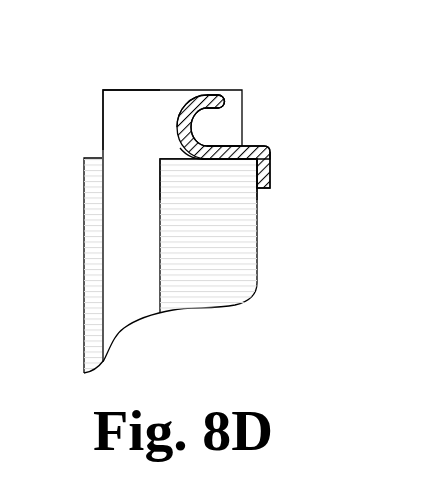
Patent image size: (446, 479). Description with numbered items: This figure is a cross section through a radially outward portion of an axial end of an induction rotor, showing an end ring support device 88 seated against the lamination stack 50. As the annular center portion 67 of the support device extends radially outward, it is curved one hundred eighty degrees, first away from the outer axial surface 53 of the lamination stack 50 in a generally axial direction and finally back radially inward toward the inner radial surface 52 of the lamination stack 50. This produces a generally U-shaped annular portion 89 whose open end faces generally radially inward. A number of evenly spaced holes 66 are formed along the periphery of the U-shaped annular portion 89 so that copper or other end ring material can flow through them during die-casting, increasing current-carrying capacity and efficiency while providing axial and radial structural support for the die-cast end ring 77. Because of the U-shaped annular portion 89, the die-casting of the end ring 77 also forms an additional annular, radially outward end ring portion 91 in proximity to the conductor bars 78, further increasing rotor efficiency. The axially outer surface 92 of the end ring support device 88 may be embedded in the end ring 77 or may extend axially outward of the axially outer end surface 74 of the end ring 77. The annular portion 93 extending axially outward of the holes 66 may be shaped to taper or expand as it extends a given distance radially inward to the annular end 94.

The lamination stack 50 is at (233, 252).
The inner radial surface 52 is at (256, 223).
The outer axial surface 53 is at (166, 158).
The holes 66 is at (185, 128).
The annular center portion 67 is at (240, 148).
The axially outer end surface 74 is at (119, 90).
The die-cast end ring 77 is at (114, 103).
The conductor bars 78 is at (131, 273).
The end ring support device 88 is at (266, 168).
The U-shaped annular portion 89 is at (200, 137).
The radially outward end ring portion 91 is at (178, 157).
The axially outer surface 92 is at (211, 99).
The annular portion 93 is at (190, 102).
The annular end 94 is at (225, 102).